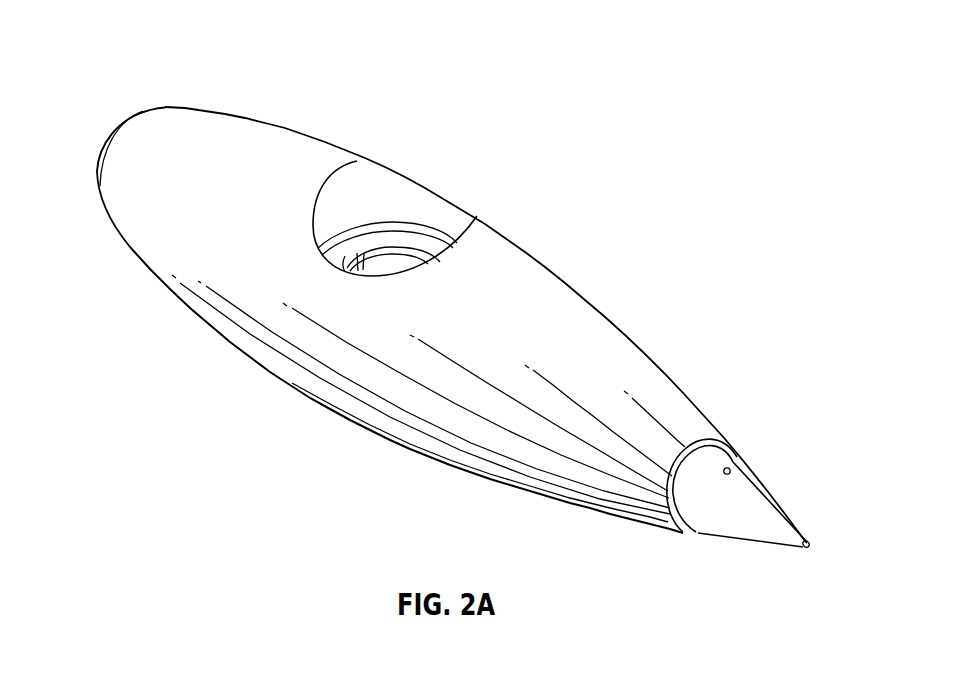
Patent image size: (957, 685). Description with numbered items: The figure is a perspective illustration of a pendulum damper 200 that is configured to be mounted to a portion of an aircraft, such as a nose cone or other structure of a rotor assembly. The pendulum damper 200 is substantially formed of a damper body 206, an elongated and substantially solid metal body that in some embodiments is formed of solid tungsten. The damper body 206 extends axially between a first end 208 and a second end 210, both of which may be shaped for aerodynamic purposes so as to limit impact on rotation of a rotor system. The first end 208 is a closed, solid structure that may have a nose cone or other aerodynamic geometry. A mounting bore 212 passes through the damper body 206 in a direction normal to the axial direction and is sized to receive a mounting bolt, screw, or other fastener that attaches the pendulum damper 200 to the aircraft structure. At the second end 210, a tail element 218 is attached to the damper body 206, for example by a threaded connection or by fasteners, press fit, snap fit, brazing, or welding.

The pendulum damper 200 is at (106, 46).
The damper body 206 is at (247, 135).
The first end 208 is at (113, 126).
The second end 210 is at (709, 434).
The mounting bore 212 is at (418, 196).
The tail element 218 is at (750, 497).